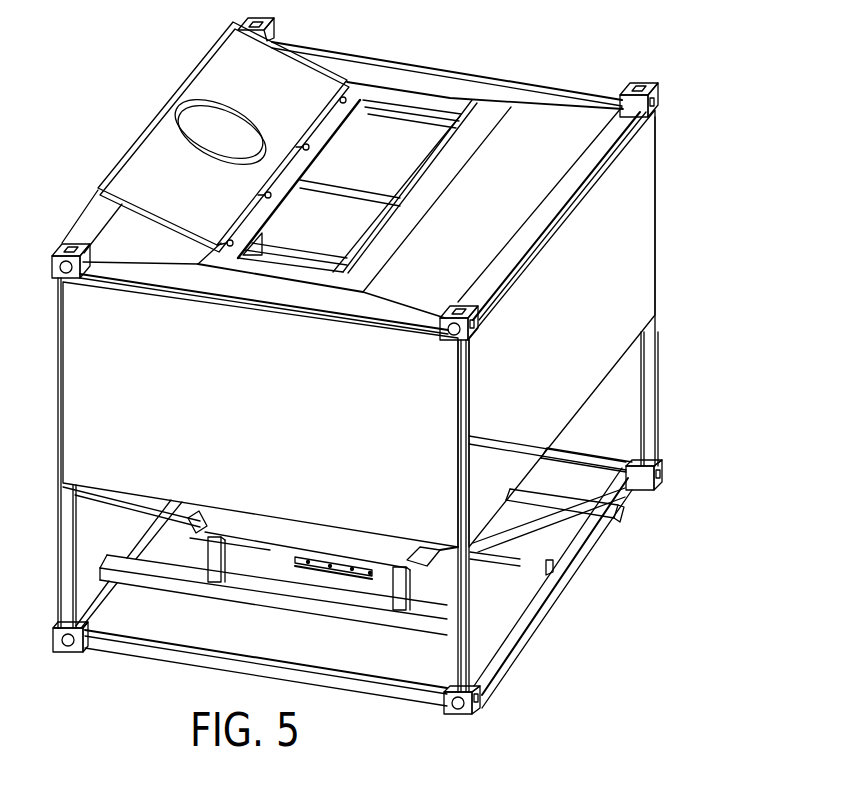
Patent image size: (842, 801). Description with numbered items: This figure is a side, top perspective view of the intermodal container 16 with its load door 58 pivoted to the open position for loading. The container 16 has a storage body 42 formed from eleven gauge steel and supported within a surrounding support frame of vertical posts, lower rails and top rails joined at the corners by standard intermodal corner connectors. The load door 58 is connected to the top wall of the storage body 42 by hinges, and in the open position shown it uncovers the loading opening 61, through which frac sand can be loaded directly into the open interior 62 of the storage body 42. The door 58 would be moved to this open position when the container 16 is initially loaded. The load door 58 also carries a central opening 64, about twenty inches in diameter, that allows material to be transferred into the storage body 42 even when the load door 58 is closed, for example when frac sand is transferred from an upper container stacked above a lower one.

The intermodal container 16 is at (696, 286).
The storage body 42 is at (645, 193).
The load door 58 is at (153, 148).
The loading opening 61 is at (437, 164).
The open interior 62 is at (386, 133).
The central opening 64 is at (208, 108).